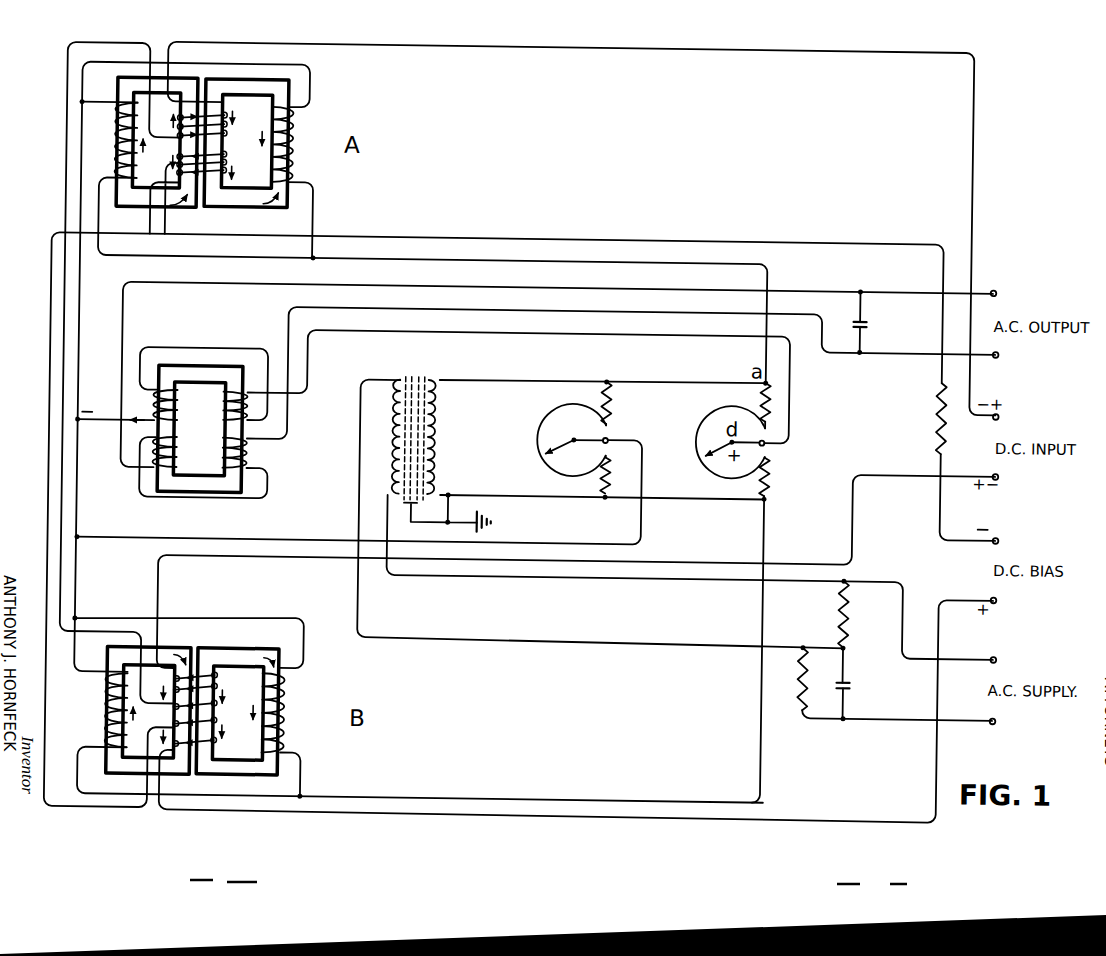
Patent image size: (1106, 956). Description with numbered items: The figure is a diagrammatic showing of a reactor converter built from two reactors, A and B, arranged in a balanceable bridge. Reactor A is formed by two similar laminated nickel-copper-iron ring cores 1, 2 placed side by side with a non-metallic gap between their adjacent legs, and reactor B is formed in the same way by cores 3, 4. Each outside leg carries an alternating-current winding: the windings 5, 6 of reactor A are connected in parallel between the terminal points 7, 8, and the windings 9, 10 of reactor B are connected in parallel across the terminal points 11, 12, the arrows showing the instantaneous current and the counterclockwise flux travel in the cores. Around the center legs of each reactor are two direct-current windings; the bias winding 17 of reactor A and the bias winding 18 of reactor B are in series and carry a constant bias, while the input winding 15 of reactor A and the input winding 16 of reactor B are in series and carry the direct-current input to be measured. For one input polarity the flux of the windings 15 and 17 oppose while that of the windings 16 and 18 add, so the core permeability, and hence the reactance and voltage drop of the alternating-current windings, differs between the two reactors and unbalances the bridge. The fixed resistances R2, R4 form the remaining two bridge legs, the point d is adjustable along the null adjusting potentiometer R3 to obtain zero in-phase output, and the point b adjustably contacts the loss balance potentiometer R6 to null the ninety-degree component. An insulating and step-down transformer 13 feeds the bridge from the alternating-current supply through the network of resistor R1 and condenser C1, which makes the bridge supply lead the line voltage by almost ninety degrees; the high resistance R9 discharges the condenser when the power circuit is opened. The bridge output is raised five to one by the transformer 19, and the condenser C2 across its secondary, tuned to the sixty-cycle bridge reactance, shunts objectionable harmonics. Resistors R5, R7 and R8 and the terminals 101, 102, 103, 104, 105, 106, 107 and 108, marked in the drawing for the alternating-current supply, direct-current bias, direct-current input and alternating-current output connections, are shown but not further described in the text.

The ring core 1 is at (119, 78).
The ring core 2 is at (273, 206).
The ring core 3 is at (182, 644).
The ring core 4 is at (279, 644).
The winding 5 is at (115, 152).
The winding 6 is at (295, 129).
The terminal point 7 is at (86, 103).
The terminal point 8 is at (318, 255).
The winding 9 is at (113, 700).
The winding 10 is at (303, 719).
The terminal point 11 is at (85, 614).
The terminal point 12 is at (314, 790).
The insulating and step down transformer 13 is at (442, 454).
The input winding 15 is at (234, 117).
The input winding 16 is at (233, 692).
The bias winding 17 is at (234, 165).
The bias winding 18 is at (236, 740).
The transformer 19 is at (200, 428).
The resistor R1 is at (857, 614).
The fixed resistance R2 is at (753, 402).
The null adjusting potentiometer R3 is at (719, 441).
The fixed resistance R4 is at (752, 478).
The resistor R5 is at (617, 403).
The loss balance potentiometer R6 is at (559, 439).
The resistor R7 is at (620, 475).
The resistor R8 is at (922, 419).
The high resistance R9 is at (788, 678).
The condenser C1 is at (857, 690).
The condenser C2 is at (871, 322).
The A.C. supply terminal 101 is at (1014, 722).
The A.C. supply terminal 102 is at (1013, 660).
The D.C. bias terminal 103 is at (1014, 600).
The D.C. input terminal 104 is at (1016, 542).
The D.C. input terminal 105 is at (1015, 478).
The D.C. input terminal 106 is at (1016, 417).
The A.C. output terminal 107 is at (1016, 355).
The A.C. output terminal 108 is at (1015, 295).